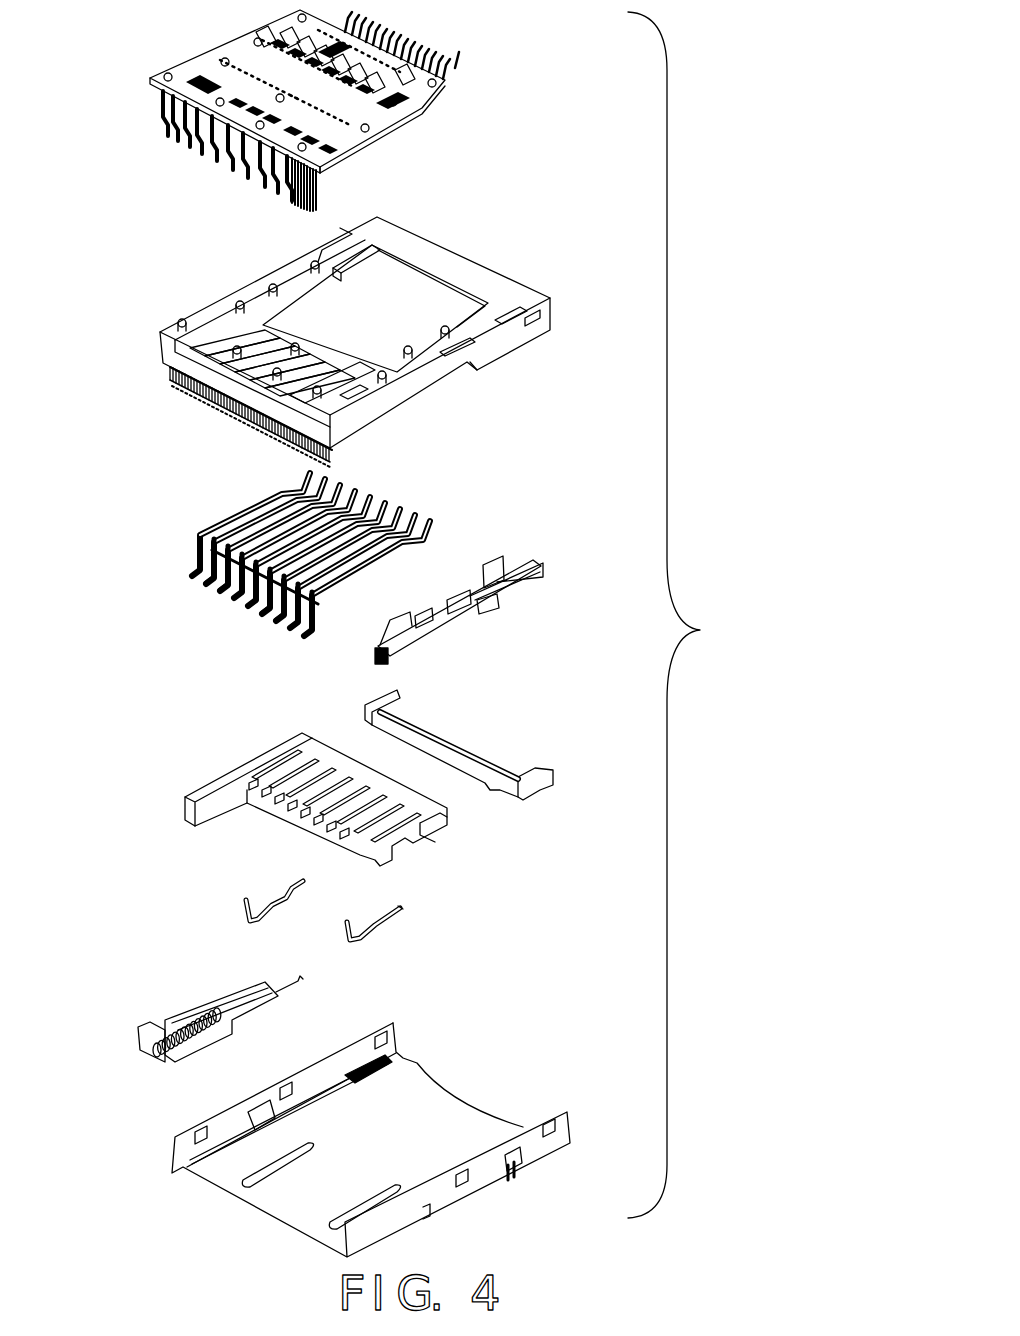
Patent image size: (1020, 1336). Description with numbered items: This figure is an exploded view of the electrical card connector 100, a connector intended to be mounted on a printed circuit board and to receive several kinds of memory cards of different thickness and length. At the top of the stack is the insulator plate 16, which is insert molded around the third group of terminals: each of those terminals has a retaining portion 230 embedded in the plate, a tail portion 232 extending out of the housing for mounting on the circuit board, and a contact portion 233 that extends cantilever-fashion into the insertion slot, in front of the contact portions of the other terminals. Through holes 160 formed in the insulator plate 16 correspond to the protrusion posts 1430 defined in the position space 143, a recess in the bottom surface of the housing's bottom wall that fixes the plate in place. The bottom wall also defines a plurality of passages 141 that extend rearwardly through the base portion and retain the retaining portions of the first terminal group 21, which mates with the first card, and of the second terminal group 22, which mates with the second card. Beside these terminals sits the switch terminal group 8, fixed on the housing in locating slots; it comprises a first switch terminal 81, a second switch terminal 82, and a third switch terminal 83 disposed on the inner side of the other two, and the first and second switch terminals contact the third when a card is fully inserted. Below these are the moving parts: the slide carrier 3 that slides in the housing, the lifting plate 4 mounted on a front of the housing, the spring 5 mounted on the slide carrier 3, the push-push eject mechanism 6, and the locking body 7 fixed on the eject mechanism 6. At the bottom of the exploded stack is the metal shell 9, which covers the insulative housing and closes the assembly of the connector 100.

The electrical card connector 100 is at (694, 615).
The insulator plate 16 is at (242, 50).
The through holes 160 is at (170, 75).
The contact portion 233 is at (457, 66).
The retaining portion 230 is at (322, 174).
The tail portion 232 is at (316, 206).
The position space 143 is at (293, 280).
The protrusion posts 1430 is at (238, 305).
The passages 141 is at (238, 398).
The second terminal group 22 is at (358, 573).
The first terminal group 21 is at (323, 618).
The switch terminal group 8 is at (516, 584).
The third switch terminal 83 is at (490, 560).
The second switch terminal 82 is at (544, 582).
The first switch terminal 81 is at (492, 612).
The slide carrier 3 is at (232, 752).
The lifting plate 4 is at (472, 748).
The locking body 7 is at (240, 893).
The spring 5 is at (415, 910).
The push-push eject mechanism 6 is at (187, 988).
The metal shell 9 is at (475, 1085).